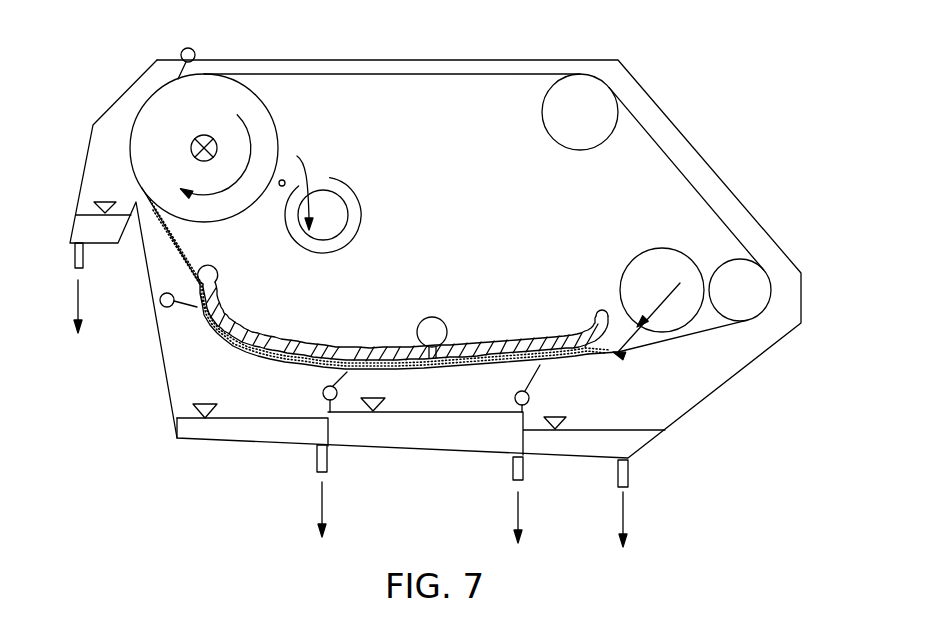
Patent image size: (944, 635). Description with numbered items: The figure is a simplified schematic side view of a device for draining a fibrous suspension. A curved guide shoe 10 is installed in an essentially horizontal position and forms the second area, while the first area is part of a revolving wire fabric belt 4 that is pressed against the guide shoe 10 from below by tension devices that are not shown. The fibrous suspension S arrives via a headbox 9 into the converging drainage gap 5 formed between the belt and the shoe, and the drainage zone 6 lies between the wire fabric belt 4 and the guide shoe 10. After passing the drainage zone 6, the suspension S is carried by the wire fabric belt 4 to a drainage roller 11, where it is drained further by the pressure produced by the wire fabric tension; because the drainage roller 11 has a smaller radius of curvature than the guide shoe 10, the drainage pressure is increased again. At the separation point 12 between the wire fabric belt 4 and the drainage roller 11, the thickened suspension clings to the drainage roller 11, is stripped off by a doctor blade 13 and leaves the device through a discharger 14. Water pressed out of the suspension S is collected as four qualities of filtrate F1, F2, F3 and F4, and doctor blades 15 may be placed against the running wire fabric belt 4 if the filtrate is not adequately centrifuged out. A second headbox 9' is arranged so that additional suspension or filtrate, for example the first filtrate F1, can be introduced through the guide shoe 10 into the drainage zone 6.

The wire fabric belt 4 is at (645, 137).
The drainage gap 5 is at (620, 356).
The drainage zone 6 is at (340, 331).
The headbox 9 is at (662, 268).
The second headbox 9' is at (437, 320).
The curved guide shoe 10 is at (553, 338).
The drainage roller 11 is at (177, 115).
The separation point 12 is at (235, 71).
The doctor blade 13 is at (283, 180).
The discharger 14 is at (335, 227).
The doctor blades 15 is at (323, 390).
The fibrous suspension S is at (658, 300).
The first filtrate F1 is at (627, 517).
The second filtrate F2 is at (522, 515).
The third filtrate F3 is at (323, 507).
The fourth filtrate F4 is at (82, 307).